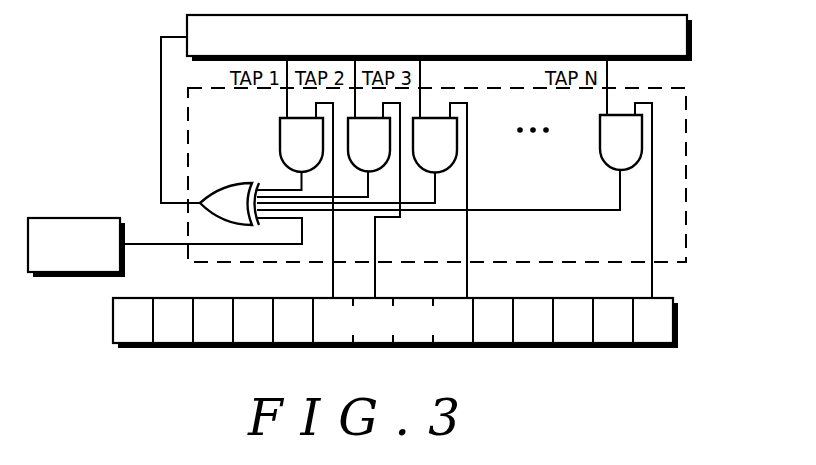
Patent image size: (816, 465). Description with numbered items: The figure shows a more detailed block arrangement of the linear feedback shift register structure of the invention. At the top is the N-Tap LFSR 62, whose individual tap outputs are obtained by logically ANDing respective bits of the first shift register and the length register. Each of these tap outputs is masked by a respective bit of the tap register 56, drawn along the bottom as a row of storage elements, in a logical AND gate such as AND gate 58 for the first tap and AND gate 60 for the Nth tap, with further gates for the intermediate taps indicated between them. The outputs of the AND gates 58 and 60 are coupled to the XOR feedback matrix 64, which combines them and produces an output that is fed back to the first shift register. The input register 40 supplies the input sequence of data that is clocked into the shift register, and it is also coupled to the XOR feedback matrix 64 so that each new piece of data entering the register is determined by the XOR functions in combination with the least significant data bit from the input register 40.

The N-Tap LFSR 62 is at (692, 40).
The AND gate 58 is at (282, 140).
The AND gate 60 is at (601, 166).
The XOR feedback matrix 64 is at (236, 181).
The input register 40 is at (76, 216).
The tap register 56 is at (678, 318).